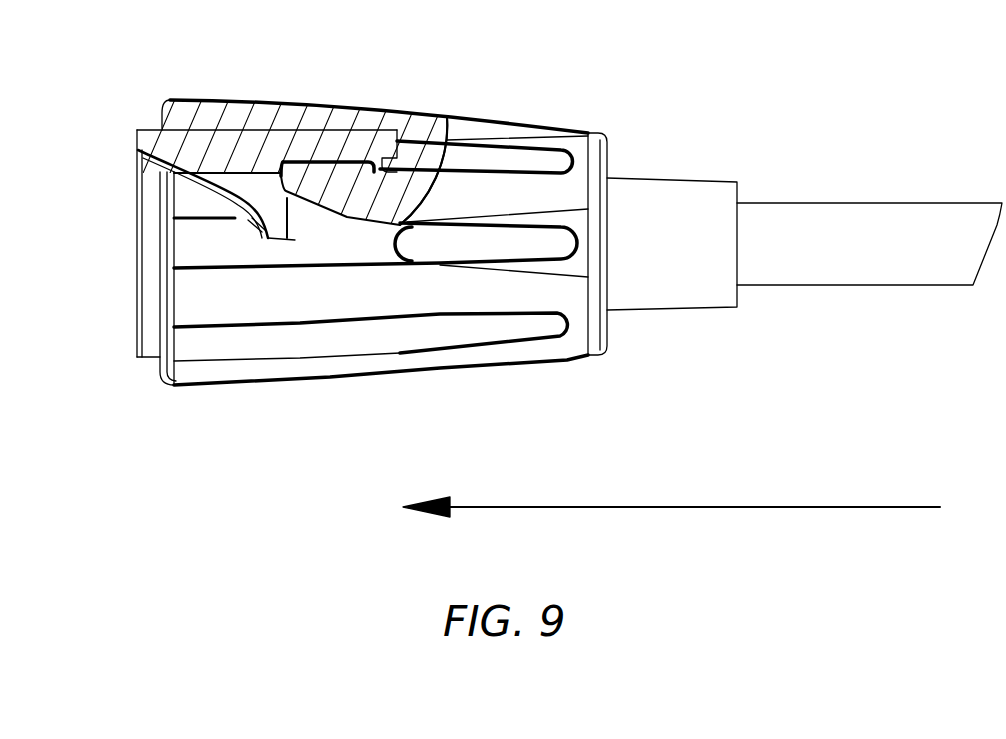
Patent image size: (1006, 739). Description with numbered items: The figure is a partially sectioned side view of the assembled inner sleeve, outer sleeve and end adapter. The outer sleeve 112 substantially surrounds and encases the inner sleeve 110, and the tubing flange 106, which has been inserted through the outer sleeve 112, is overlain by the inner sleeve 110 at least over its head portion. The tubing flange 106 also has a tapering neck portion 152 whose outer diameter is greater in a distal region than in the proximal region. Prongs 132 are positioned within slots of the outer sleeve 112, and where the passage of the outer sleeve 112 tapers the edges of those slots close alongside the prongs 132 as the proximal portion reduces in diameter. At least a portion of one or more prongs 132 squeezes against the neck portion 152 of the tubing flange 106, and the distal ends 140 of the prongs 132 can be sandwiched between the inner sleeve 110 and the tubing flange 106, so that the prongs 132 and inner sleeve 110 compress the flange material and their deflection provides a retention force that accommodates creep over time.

The inner sleeve 110 is at (305, 143).
The distal ends 140 is at (378, 160).
The prongs 132 is at (424, 160).
The tubing flange 106 is at (327, 200).
The neck portion 152 is at (413, 187).
The outer sleeve 112 is at (202, 347).